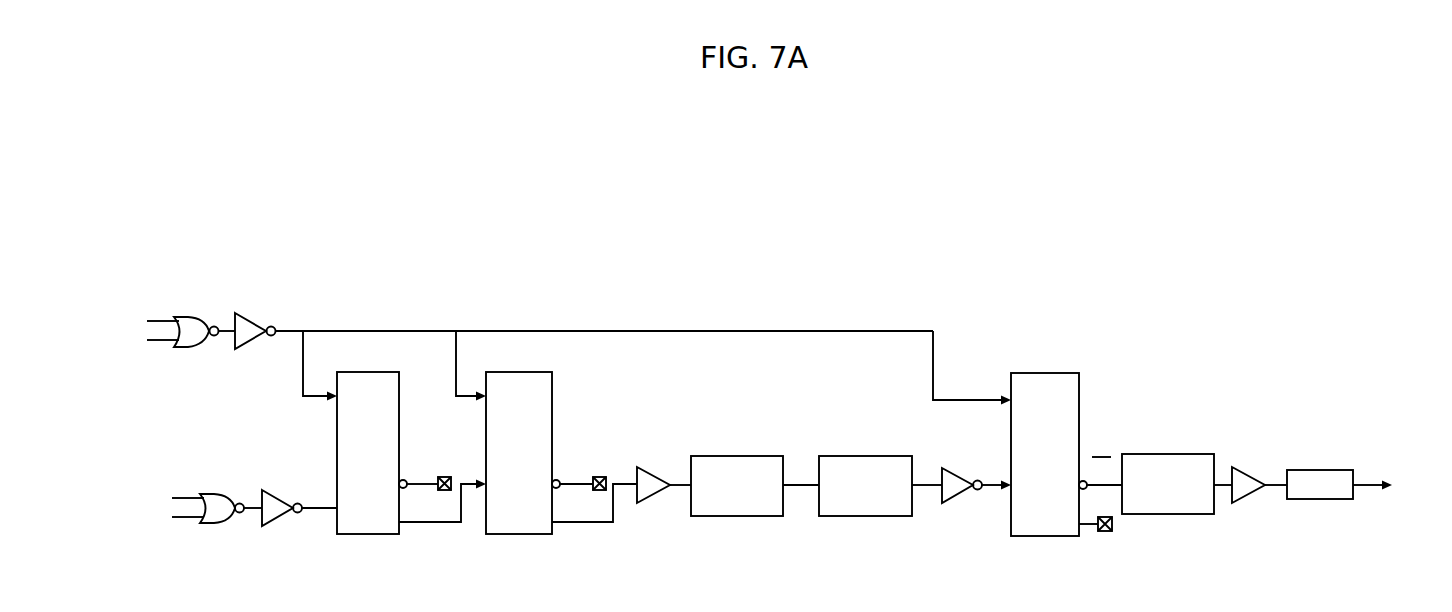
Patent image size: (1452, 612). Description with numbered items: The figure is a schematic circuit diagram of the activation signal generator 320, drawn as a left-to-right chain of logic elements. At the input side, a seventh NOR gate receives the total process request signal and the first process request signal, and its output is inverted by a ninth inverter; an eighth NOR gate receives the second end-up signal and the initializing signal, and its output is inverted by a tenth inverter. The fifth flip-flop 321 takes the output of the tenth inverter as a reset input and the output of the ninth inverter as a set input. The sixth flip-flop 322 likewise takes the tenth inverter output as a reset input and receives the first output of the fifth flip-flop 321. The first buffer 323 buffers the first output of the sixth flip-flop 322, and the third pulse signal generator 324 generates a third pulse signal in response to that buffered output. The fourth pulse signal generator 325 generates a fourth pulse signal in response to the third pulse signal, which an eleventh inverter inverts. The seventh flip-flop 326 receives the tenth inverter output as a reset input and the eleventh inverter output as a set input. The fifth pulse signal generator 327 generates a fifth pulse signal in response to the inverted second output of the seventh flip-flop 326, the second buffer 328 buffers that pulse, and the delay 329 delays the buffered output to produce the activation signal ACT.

The activation signal generator 320 is at (1058, 290).
The fifth flip-flop 321 is at (372, 372).
The sixth flip-flop 322 is at (523, 372).
The first buffer 323 is at (652, 467).
The third pulse signal generator 324 is at (742, 456).
The fourth pulse signal generator 325 is at (868, 456).
The seventh flip-flop 326 is at (1050, 374).
The fifth pulse signal generator 327 is at (1172, 455).
The second buffer 328 is at (1248, 467).
The delay 329 is at (1325, 470).